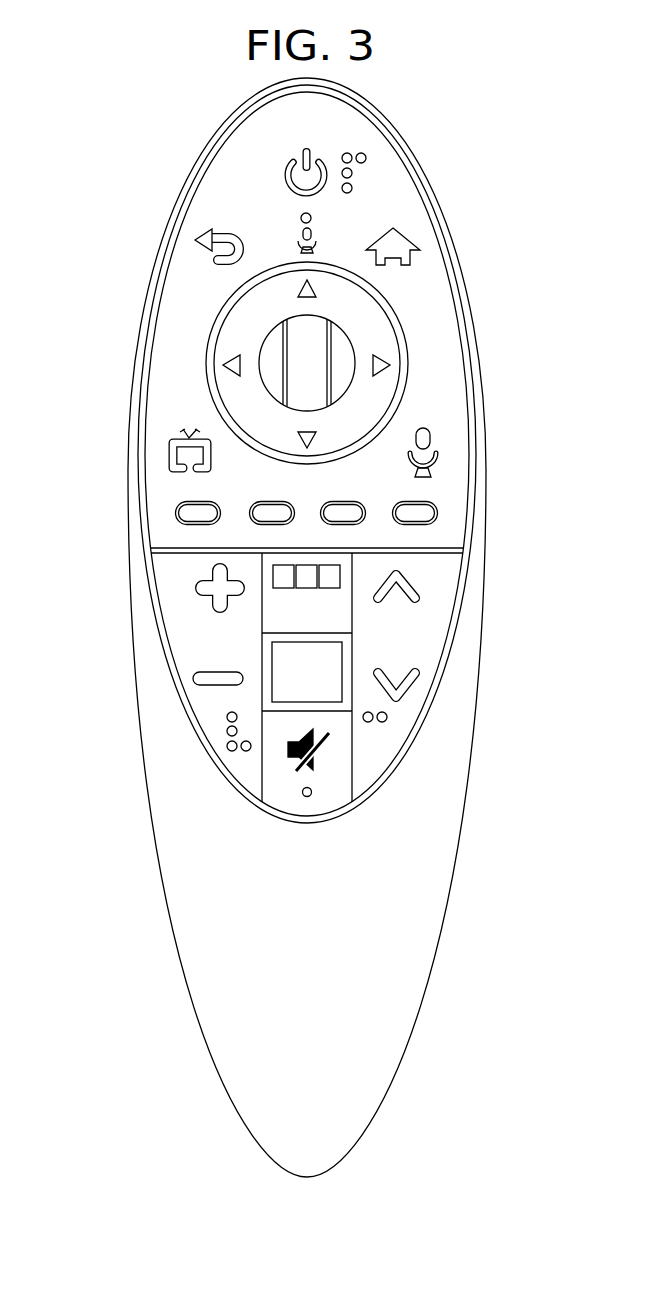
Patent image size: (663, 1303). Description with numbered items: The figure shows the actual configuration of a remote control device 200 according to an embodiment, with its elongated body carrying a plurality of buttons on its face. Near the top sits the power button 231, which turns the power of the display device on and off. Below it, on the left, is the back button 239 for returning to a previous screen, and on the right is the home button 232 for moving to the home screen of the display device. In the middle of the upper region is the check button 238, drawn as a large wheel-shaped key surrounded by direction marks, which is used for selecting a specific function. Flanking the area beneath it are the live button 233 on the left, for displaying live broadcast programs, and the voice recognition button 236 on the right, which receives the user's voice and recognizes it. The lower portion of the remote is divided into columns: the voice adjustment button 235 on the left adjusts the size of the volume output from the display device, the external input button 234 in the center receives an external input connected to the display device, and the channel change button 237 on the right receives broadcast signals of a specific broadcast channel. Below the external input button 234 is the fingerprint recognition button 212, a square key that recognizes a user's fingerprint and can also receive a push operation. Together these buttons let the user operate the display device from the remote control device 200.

The remote control device 200 is at (75, 121).
The power button 231 is at (322, 161).
The back button 239 is at (207, 244).
The home button 232 is at (405, 239).
The check button 238 is at (272, 348).
The live button 233 is at (170, 461).
The voice recognition button 236 is at (436, 451).
The external input button 234 is at (313, 563).
The channel change button 237 is at (432, 622).
The voice adjustment button 235 is at (170, 648).
The fingerprint recognition button 212 is at (323, 702).